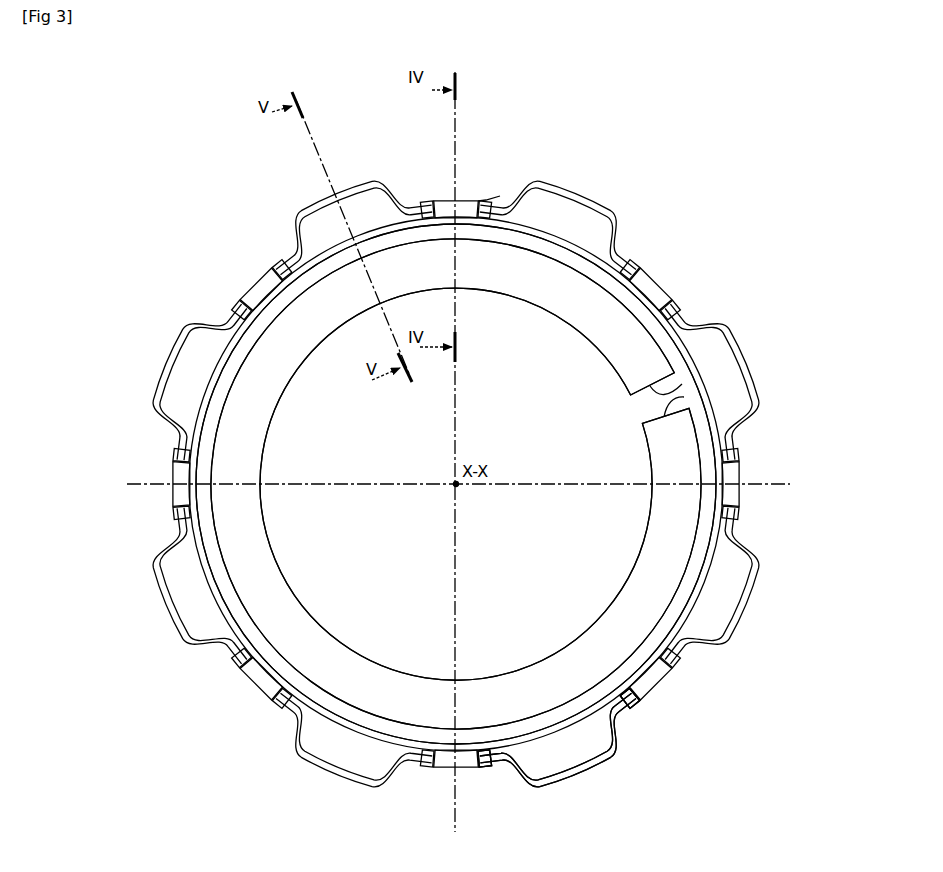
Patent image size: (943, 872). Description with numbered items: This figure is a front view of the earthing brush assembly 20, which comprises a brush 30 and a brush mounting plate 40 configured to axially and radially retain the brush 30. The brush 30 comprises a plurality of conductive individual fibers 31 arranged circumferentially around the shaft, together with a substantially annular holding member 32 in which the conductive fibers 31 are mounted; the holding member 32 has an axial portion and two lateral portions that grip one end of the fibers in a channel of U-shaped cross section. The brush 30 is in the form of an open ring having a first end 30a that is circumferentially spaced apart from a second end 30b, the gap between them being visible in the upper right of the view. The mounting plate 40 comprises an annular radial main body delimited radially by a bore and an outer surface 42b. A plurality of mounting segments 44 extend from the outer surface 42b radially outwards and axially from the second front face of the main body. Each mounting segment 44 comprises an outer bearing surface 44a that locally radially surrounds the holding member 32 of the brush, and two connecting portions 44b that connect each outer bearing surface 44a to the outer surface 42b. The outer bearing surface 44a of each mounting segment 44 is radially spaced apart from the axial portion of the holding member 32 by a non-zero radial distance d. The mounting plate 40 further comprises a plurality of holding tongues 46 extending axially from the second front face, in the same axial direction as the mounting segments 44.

The earthing brush assembly 20 is at (645, 126).
The brush 30 is at (705, 612).
The first end 30a is at (683, 383).
The second end 30b is at (684, 397).
The conductive individual fibers 31 is at (640, 347).
The holding member 32 is at (618, 244).
The brush mounting plate 40 is at (572, 183).
The outer surface 42b is at (490, 200).
The mounting segments 44 is at (352, 185).
The outer bearing surface 44a is at (163, 347).
The connecting portions 44b is at (210, 318).
The holding tongues 46 is at (462, 198).
The radial distance d is at (350, 205).